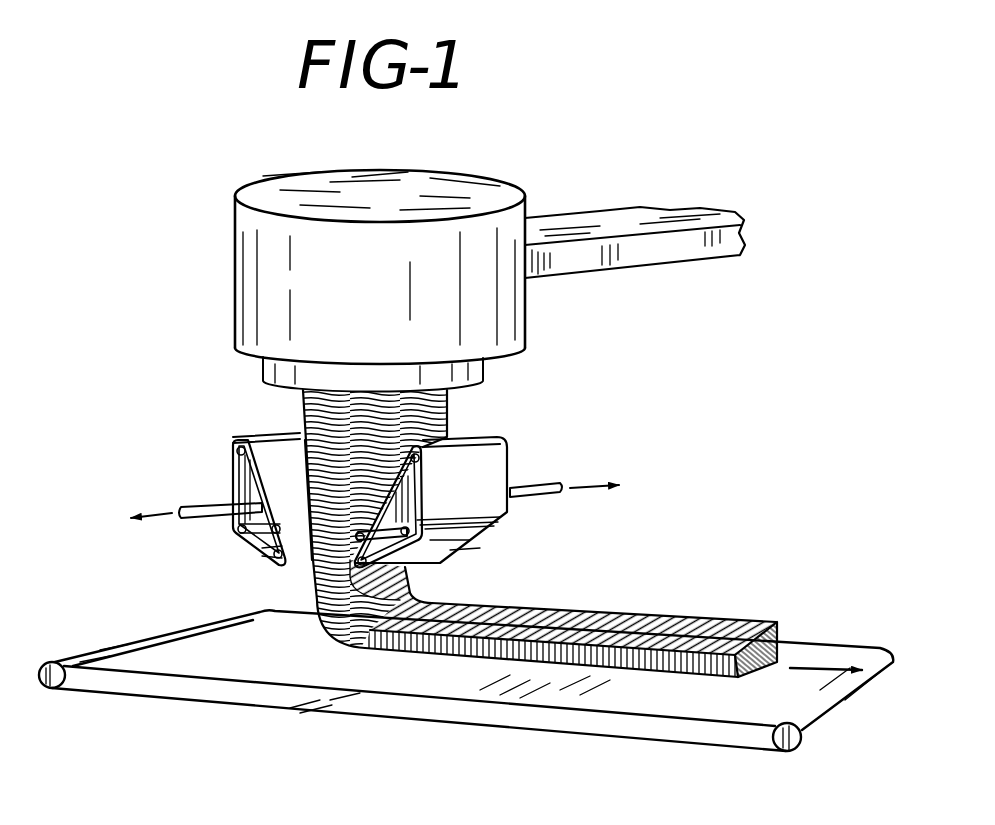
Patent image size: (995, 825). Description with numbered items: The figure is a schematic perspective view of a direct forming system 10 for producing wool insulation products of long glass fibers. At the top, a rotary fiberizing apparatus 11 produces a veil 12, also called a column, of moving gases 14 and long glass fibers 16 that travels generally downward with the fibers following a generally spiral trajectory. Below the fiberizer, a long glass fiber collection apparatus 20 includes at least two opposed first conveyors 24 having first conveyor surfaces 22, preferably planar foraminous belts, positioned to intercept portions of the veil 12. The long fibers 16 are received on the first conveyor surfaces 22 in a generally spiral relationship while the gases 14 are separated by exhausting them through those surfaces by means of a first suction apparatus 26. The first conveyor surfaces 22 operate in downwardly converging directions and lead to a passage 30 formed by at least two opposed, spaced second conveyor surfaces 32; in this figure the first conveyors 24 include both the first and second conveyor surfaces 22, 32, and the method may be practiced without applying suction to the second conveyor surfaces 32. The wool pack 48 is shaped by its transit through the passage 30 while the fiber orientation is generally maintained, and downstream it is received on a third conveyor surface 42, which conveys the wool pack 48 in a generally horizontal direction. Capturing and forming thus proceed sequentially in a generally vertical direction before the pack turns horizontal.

The system 10 is at (150, 350).
The rotary fiberizing apparatus 11 is at (256, 359).
The veil 12 is at (453, 403).
The moving gases 14 is at (160, 517).
The long glass fibers 16 is at (677, 617).
The long glass fiber collection apparatus 20 is at (517, 432).
The first conveyor surfaces 22 is at (378, 483).
The first conveyors 24 is at (227, 444).
The first suction apparatus 26 is at (198, 503).
The passage 30 is at (302, 576).
The second conveyor surfaces 32 is at (270, 548).
The third conveyor surface 42 is at (467, 683).
The wool pack 48 is at (753, 615).